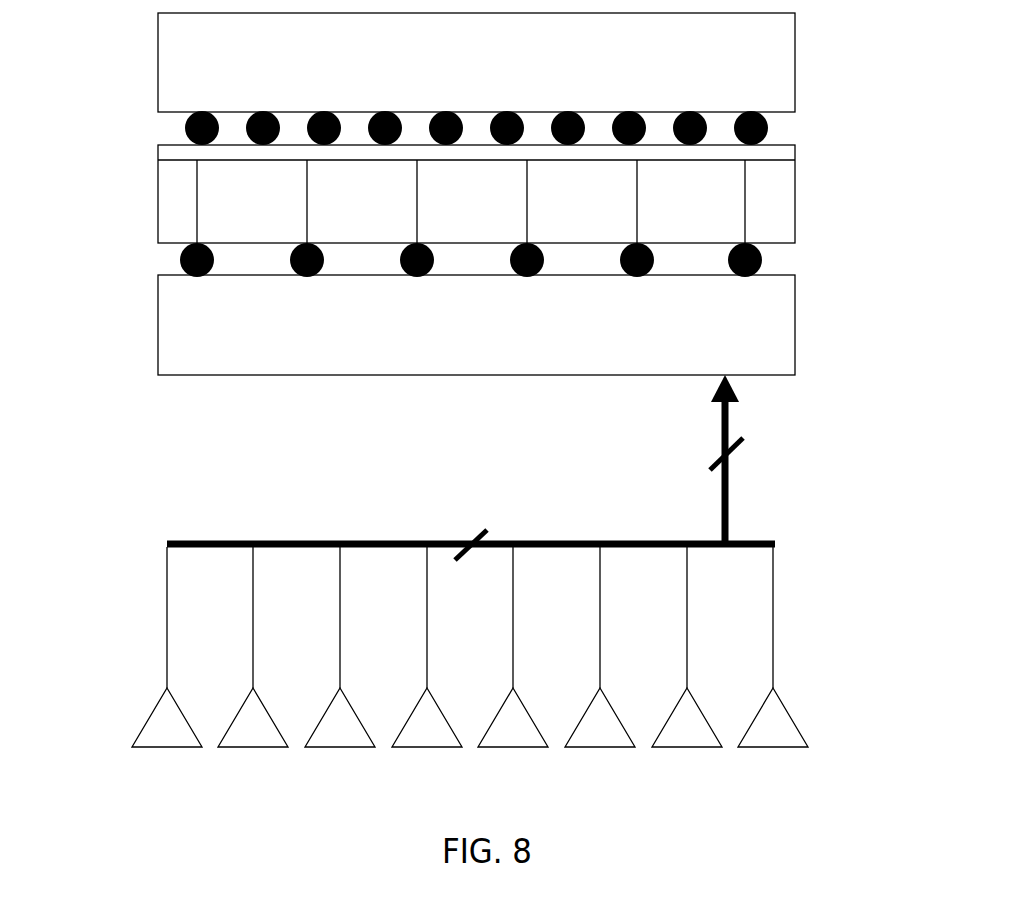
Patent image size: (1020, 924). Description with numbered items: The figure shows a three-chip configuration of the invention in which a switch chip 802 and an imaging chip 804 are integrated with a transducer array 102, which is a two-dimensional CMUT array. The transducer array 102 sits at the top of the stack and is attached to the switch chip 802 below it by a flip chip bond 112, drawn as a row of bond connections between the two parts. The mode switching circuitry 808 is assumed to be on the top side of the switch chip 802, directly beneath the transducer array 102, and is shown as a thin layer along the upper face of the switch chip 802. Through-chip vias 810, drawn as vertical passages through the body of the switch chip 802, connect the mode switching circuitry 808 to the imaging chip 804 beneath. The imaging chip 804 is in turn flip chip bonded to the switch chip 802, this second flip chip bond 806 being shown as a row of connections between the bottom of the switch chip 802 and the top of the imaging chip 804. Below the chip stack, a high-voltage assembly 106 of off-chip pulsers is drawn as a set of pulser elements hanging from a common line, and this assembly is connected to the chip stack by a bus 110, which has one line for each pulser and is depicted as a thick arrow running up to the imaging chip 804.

The transducer array 102 is at (502, 73).
The flip chip bond 112 is at (797, 128).
The switch chip 802 is at (158, 215).
The mode switching circuitry 808 is at (165, 148).
The through-chip vias 810 is at (654, 200).
The flip chip bond 806 is at (787, 263).
The imaging chip 804 is at (452, 343).
The bus 110 is at (729, 497).
The high-voltage assembly 106 is at (130, 527).